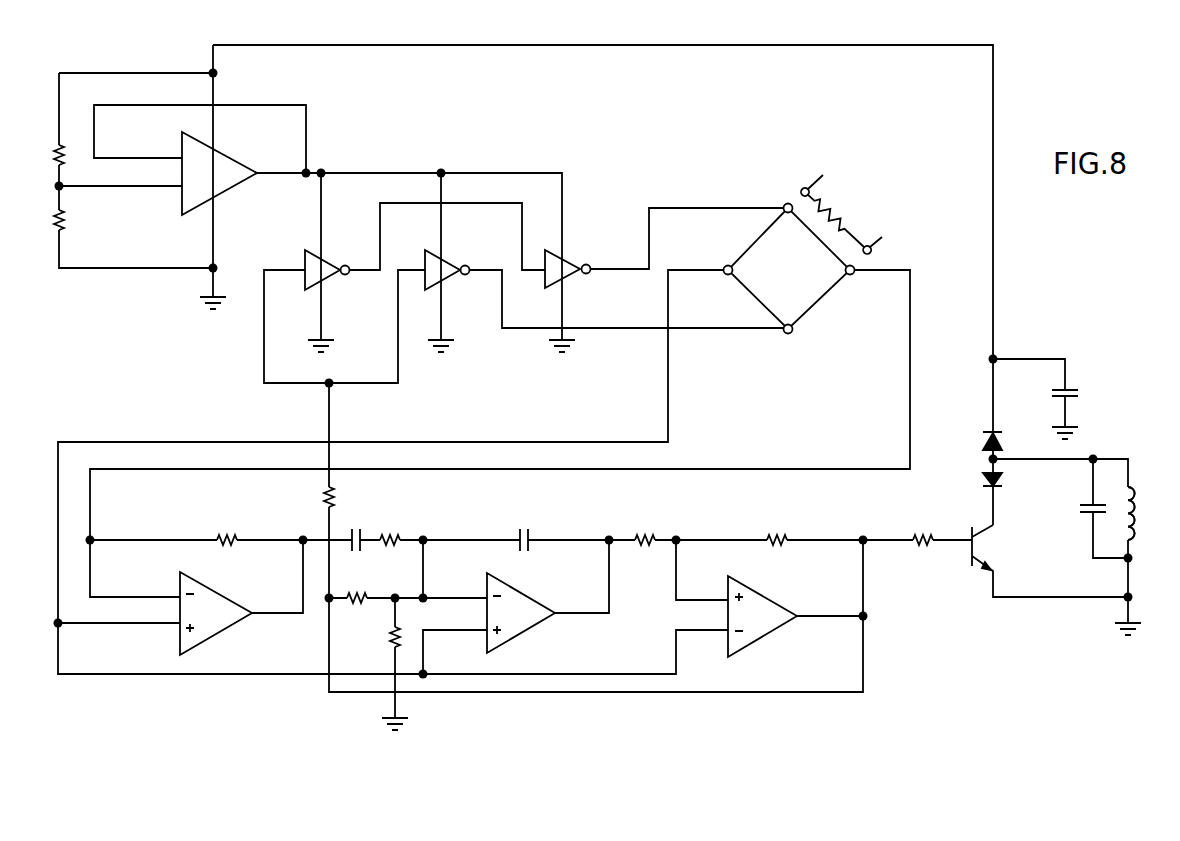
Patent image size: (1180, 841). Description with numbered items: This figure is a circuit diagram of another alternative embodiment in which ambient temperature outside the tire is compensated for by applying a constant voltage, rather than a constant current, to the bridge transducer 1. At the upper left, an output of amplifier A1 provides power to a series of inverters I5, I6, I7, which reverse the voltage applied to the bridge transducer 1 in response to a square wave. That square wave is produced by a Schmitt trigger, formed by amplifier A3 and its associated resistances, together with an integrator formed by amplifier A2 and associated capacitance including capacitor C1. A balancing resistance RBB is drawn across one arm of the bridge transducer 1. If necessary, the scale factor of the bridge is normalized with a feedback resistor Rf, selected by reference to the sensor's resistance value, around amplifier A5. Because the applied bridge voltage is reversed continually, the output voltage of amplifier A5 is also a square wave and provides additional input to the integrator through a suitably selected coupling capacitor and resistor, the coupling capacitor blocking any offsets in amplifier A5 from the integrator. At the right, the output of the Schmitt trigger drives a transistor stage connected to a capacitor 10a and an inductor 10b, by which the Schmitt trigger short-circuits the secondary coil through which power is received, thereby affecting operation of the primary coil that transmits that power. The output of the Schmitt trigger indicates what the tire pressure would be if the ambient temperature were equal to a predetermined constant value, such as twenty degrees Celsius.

The bridge transducer 1 is at (811, 284).
The capacitor 10a is at (1085, 505).
The inductor 10b is at (1135, 506).
The amplifier A1 is at (219, 173).
The amplifier A2 is at (521, 613).
The amplifier A3 is at (762, 616).
The amplifier A5 is at (216, 613).
The inverter I5 is at (326, 260).
The inverter I6 is at (446, 260).
The inverter I7 is at (566, 260).
The feedback resistor Rf is at (216, 512).
The capacitor C1 is at (530, 518).
The bridge balance resistor RBB is at (840, 215).